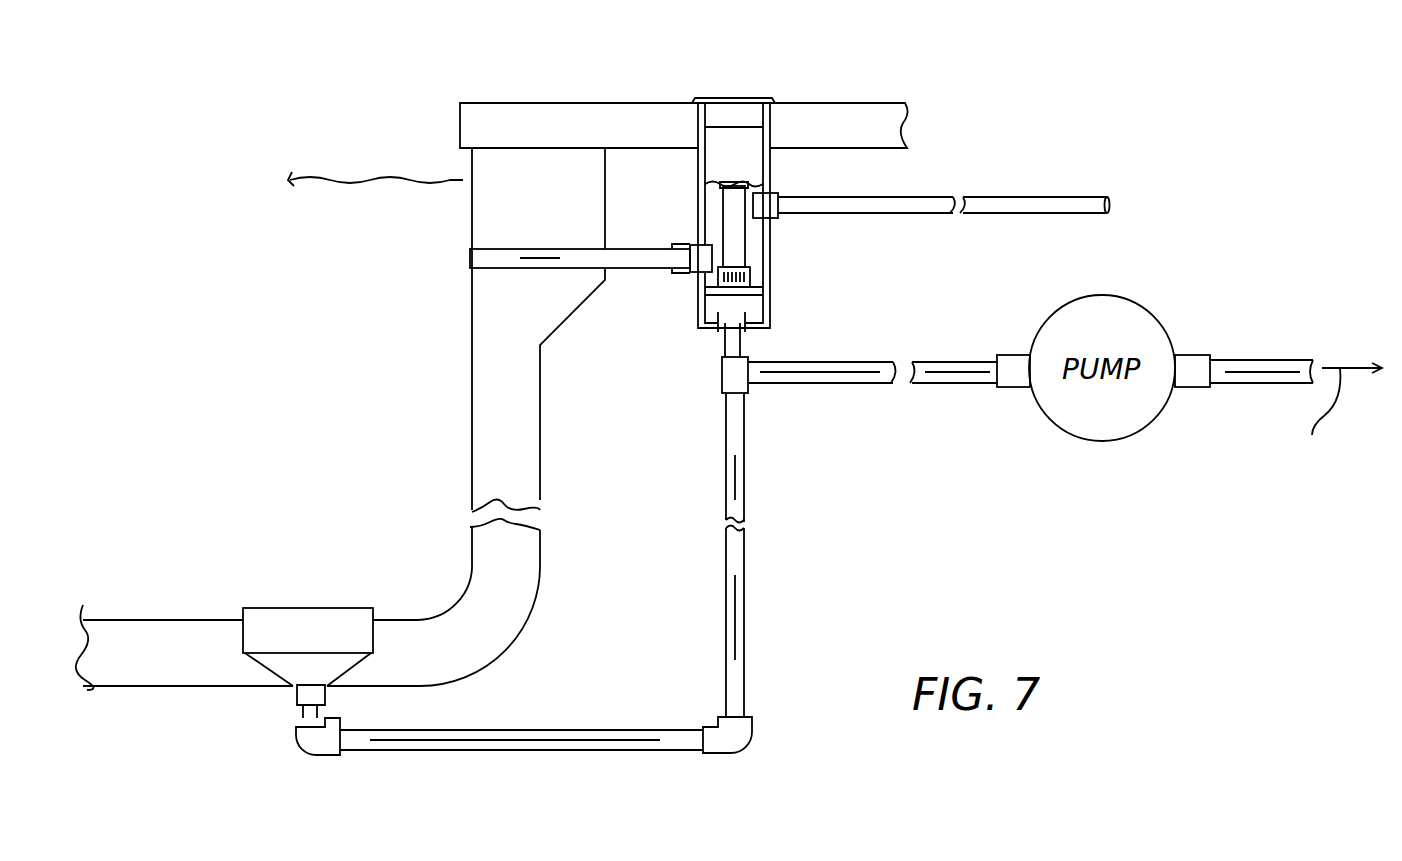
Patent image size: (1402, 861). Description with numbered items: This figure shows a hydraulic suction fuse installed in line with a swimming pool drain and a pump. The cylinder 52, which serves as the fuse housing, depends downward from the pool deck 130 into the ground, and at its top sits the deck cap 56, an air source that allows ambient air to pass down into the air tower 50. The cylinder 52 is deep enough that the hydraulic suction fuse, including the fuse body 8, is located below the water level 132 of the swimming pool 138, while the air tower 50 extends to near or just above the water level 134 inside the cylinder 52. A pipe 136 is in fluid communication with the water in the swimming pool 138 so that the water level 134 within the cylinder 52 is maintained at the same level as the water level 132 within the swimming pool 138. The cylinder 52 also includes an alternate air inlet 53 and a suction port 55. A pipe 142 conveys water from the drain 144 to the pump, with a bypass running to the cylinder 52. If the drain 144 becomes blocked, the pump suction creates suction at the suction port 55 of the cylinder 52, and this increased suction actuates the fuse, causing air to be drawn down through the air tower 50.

The pool deck 130 is at (888, 115).
The water level 132 is at (358, 180).
The water level 134 is at (750, 184).
The pipe 136 is at (510, 270).
The swimming pool 138 is at (472, 355).
The pipe 142 is at (617, 730).
The drain 144 is at (322, 606).
The air tower 50 is at (738, 232).
The cylinder 52 is at (698, 207).
The alternate air inlet 53 is at (786, 207).
The suction port 55 is at (723, 348).
The deck cap 56 is at (743, 100).
The fuse body 8 is at (728, 289).